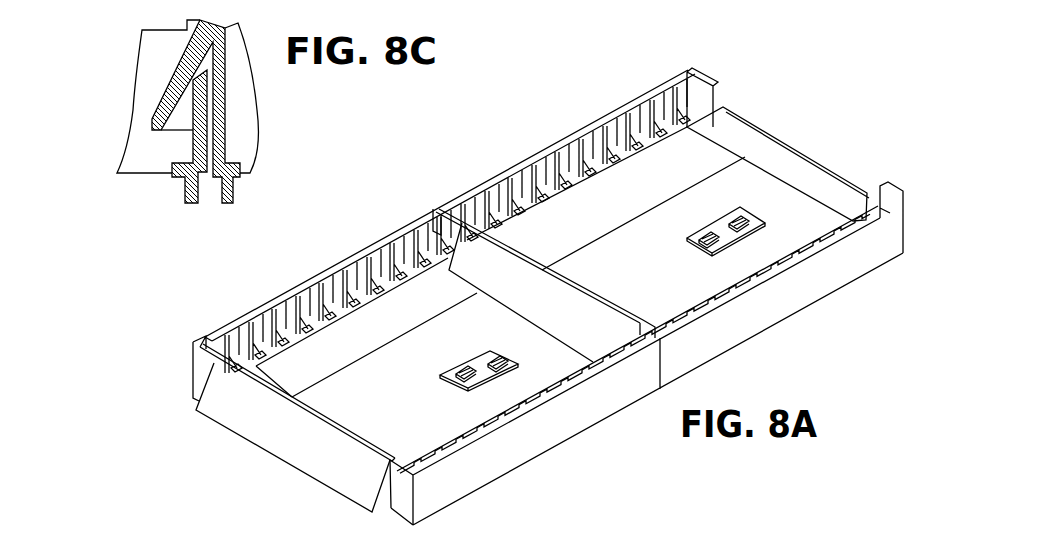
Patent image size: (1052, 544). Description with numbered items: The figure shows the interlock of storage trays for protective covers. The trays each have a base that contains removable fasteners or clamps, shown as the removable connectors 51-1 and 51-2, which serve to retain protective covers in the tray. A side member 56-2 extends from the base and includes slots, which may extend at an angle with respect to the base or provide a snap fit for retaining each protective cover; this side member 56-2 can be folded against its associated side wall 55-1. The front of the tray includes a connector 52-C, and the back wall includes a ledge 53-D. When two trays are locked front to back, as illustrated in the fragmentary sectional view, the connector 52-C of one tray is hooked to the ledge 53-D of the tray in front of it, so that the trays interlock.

In FIG. 8A, the removable connector 51-1 is at (453, 383).
In FIG. 8A, the removable connector 51-2 is at (507, 358).
In FIG. 8C, the connector 52-C is at (167, 87).
In FIG. 8A, the connector 52-C is at (270, 433).
In FIG. 8C, the ledge 53-D is at (205, 117).
In FIG. 8A, the ledge 53-D is at (823, 165).
In FIG. 8A, the side wall 55-1 is at (583, 410).
In FIG. 8A, the side member 56-2 is at (473, 157).